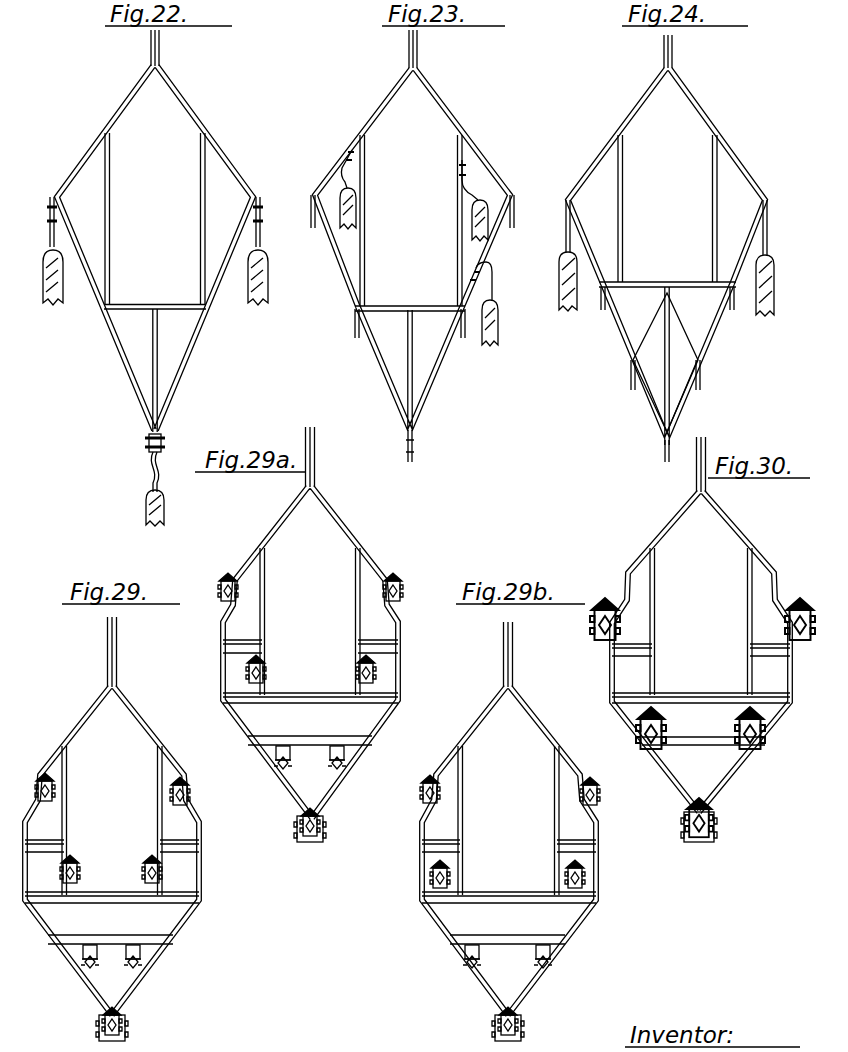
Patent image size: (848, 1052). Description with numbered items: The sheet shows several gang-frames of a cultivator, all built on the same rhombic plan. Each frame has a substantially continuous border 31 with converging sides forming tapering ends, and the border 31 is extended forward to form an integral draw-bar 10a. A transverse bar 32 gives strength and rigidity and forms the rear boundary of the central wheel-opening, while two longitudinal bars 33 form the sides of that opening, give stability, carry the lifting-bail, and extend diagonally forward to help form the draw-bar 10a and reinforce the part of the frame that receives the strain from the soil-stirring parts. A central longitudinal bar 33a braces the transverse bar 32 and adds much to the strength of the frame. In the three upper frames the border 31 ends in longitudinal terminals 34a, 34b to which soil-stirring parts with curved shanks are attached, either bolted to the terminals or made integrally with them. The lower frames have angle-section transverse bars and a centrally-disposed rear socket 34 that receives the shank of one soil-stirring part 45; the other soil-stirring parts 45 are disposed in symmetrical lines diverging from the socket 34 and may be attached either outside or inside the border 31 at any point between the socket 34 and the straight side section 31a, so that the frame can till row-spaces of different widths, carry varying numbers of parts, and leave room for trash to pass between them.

In FIG. 22, the draw-bar 10a is at (160, 42).
In FIG. 23, the draw-bar 10a is at (418, 48).
In FIG. 24, the draw-bar 10a is at (676, 47).
In FIG. 22, the border 31 is at (200, 108).
In FIG. 23, the border 31 is at (458, 117).
In FIG. 24, the border 31 is at (718, 126).
In FIG. 22, the longitudinal bar 33 is at (110, 215).
In FIG. 23, the longitudinal bar 33 is at (365, 240).
In FIG. 24, the longitudinal bar 33 is at (712, 183).
In FIG. 22, the transverse bar 32 is at (139, 311).
In FIG. 23, the transverse bar 32 is at (395, 304).
In FIG. 24, the transverse bar 32 is at (650, 286).
In FIG. 22, the longitudinal bar 33a is at (158, 352).
In FIG. 23, the longitudinal bar 33a is at (414, 350).
In FIG. 24, the longitudinal bar 33a is at (670, 368).
In FIG. 22, the longitudinal terminal 34a is at (162, 447).
In FIG. 23, the longitudinal terminal 34a is at (414, 453).
In FIG. 24, the longitudinal terminal 34a is at (665, 447).
In FIG. 22, the longitudinal terminal 34b is at (50, 212).
In FIG. 23, the longitudinal terminal 34b is at (311, 212).
In FIG. 24, the longitudinal terminal 34b is at (603, 312).
In FIG. 29A, the straight side section 31a is at (400, 678).
In FIG. 29, the straight side section 31a is at (197, 872).
In FIG. 29B, the straight side section 31a is at (597, 872).
In FIG. 30, the straight side section 31a is at (790, 663).
In FIG. 29A, the soil-stirring part 45 is at (235, 577).
In FIG. 29, the soil-stirring part 45 is at (55, 777).
In FIG. 29B, the soil-stirring part 45 is at (430, 790).
In FIG. 30, the soil-stirring part 45 is at (605, 598).
In FIG. 29A, the socket 34 is at (320, 832).
In FIG. 29, the socket 34 is at (123, 1023).
In FIG. 29B, the socket 34 is at (518, 1023).
In FIG. 30, the socket 34 is at (713, 830).